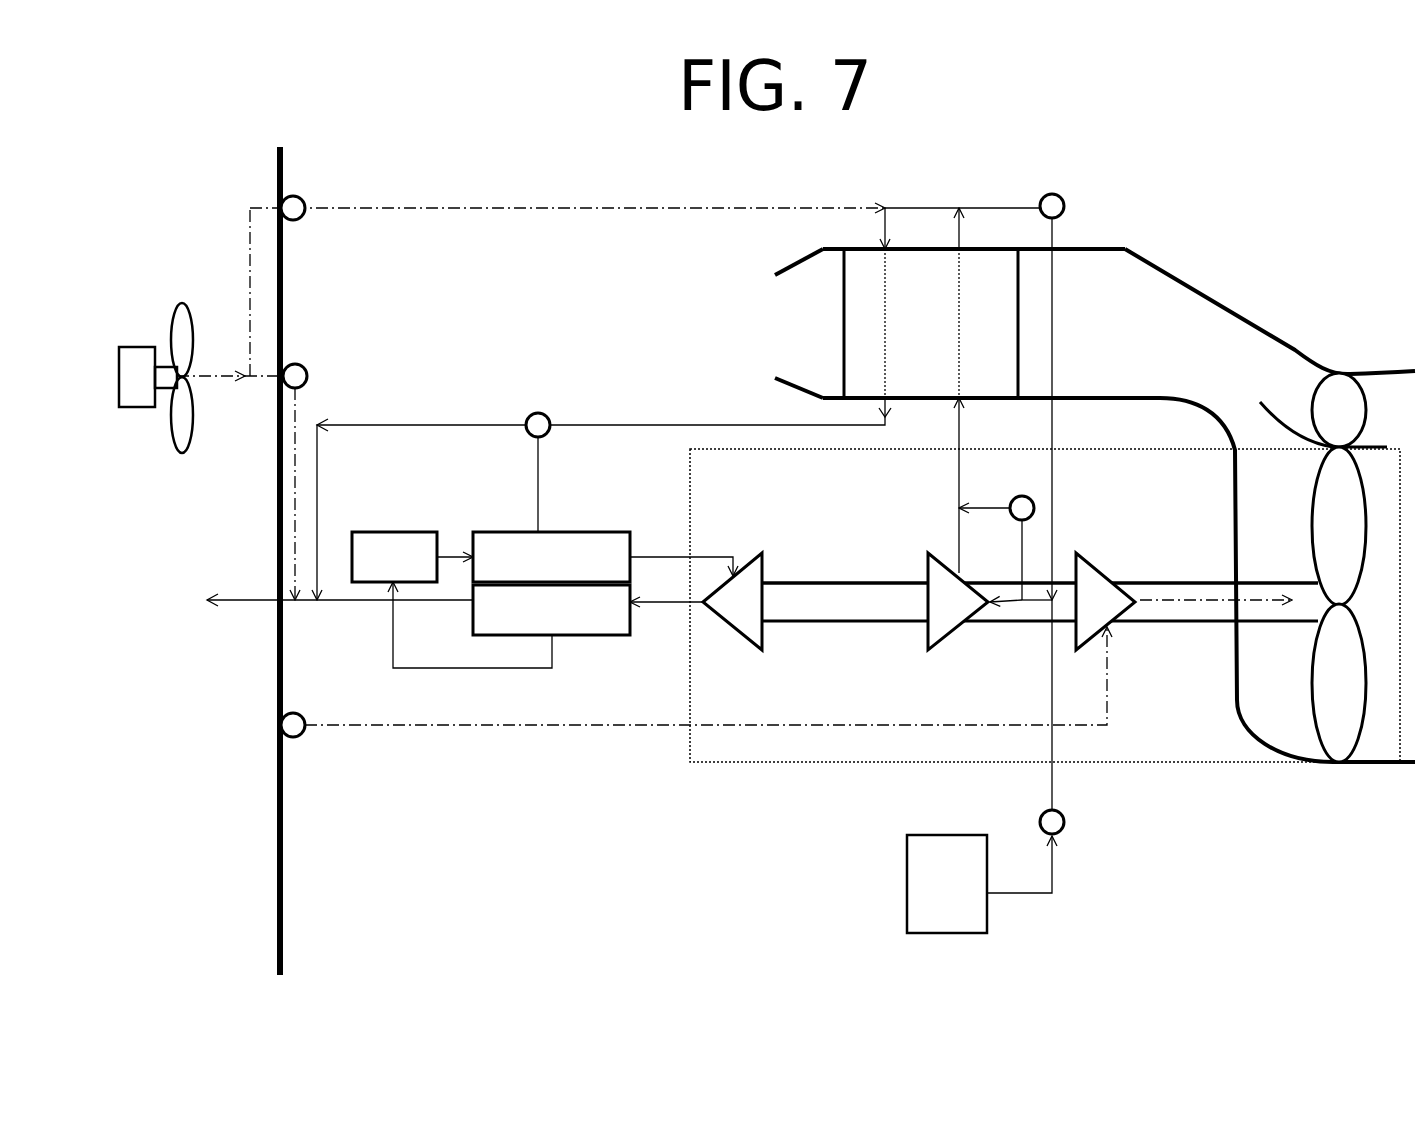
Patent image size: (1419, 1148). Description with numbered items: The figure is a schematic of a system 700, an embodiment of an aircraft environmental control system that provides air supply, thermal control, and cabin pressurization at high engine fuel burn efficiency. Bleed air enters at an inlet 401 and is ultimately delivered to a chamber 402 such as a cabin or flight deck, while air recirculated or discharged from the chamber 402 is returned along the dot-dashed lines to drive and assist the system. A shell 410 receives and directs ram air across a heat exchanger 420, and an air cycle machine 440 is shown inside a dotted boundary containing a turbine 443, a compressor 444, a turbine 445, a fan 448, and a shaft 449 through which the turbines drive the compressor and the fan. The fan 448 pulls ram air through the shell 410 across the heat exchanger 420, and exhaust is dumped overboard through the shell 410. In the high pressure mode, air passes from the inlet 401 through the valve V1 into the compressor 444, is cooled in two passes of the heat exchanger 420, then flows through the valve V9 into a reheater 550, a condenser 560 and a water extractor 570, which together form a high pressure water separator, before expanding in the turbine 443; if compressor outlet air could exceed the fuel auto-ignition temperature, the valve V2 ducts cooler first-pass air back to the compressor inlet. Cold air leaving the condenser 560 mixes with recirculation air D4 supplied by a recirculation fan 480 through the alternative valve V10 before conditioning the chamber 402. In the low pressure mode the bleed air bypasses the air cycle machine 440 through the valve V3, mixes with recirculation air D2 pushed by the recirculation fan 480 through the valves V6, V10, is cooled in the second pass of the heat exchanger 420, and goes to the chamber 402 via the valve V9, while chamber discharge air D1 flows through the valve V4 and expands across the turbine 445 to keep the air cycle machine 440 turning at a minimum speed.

The system 700 is at (1286, 175).
The chamber 402 is at (280, 147).
The recirculation fan 480 is at (156, 447).
The shell 410 is at (1186, 285).
The heat exchanger 420 is at (910, 338).
The air cycle machine 440 is at (1220, 763).
The turbine 443 is at (722, 614).
The compressor 444 is at (935, 614).
The turbine 445 is at (1081, 614).
The fan 448 is at (1292, 663).
The shaft 449 is at (1173, 623).
The reheater 550 is at (532, 570).
The condenser 560 is at (532, 623).
The water extractor 570 is at (375, 570).
The inlet 401 is at (927, 918).
The valve V1 is at (1064, 830).
The valve V2 is at (1063, 200).
The valve V3 is at (1017, 496).
The valve V4 is at (305, 735).
The valve V6 is at (303, 217).
The valve V9 is at (550, 417).
The valve V10 is at (305, 363).
The chamber discharge air D1 is at (425, 723).
The recirculation air D2 is at (488, 205).
The recirculation air D4 is at (295, 507).